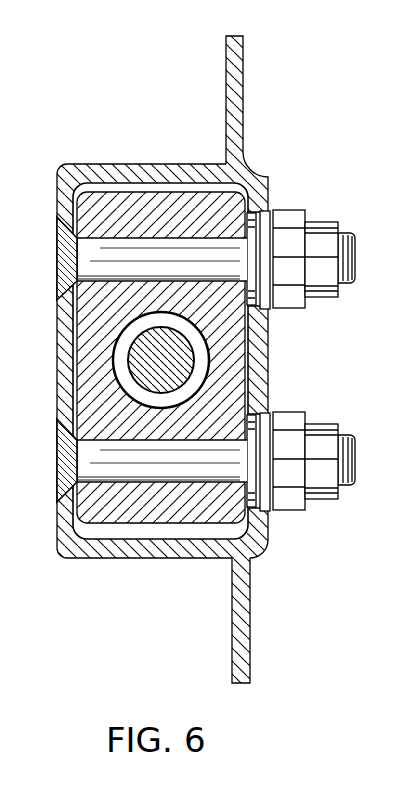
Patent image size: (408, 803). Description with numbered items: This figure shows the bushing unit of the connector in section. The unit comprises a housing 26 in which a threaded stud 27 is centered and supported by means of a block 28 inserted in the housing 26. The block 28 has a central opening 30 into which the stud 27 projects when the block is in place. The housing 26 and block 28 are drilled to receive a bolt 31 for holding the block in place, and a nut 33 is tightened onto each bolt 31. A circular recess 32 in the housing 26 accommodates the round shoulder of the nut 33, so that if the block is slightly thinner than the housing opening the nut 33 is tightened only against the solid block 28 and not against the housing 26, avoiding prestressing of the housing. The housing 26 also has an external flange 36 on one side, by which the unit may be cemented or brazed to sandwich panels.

The housing 26 is at (138, 556).
The threaded stud 27 is at (186, 353).
The block 28 is at (228, 378).
The central opening 30 is at (196, 330).
The bolt 31 is at (66, 263).
The circular recess 32 is at (251, 211).
The nut 33 is at (293, 221).
The external flange 36 is at (237, 75).